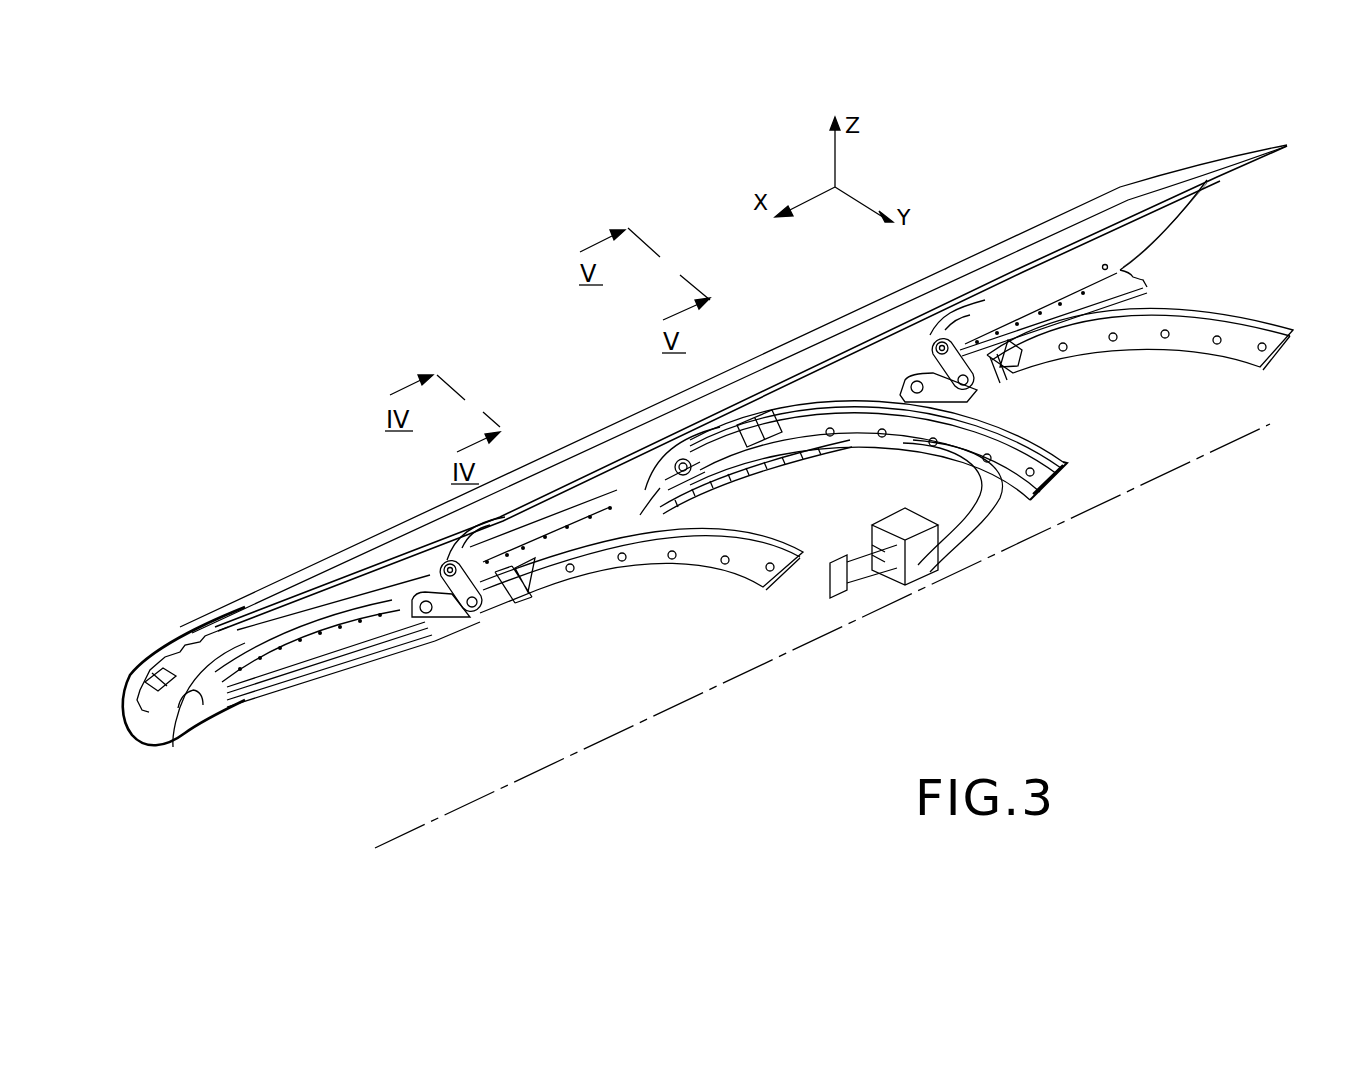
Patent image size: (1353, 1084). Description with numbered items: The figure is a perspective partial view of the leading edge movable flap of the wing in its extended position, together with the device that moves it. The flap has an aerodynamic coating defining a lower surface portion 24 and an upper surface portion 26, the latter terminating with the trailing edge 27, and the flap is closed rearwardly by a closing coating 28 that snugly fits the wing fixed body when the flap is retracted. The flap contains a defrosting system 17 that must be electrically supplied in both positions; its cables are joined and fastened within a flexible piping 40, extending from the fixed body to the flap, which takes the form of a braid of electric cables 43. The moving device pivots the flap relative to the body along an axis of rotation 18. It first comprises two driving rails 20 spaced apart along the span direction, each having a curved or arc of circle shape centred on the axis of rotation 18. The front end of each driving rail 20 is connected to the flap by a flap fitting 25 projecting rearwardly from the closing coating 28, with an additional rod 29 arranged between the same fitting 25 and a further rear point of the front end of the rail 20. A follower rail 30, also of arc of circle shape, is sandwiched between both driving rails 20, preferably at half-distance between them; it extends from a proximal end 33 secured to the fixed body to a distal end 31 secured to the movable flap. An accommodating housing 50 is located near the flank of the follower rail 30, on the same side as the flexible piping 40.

The defrosting system 17 is at (655, 478).
The axis of rotation 18 is at (545, 773).
The driving rails 20 is at (667, 575).
The lower surface portion 24 is at (140, 745).
The flap fitting 25 is at (433, 582).
The upper surface portion 26 is at (228, 604).
The trailing edge 27 is at (1165, 208).
The closing coating 28 is at (306, 627).
The additional rod 29 is at (453, 617).
The follower rail 30 is at (1040, 478).
The distal end 31 is at (700, 460).
The proximal end 33 is at (1068, 464).
The flexible piping 40 is at (907, 447).
The braid of electric cables 43 is at (843, 595).
The accommodating housing 50 is at (925, 575).